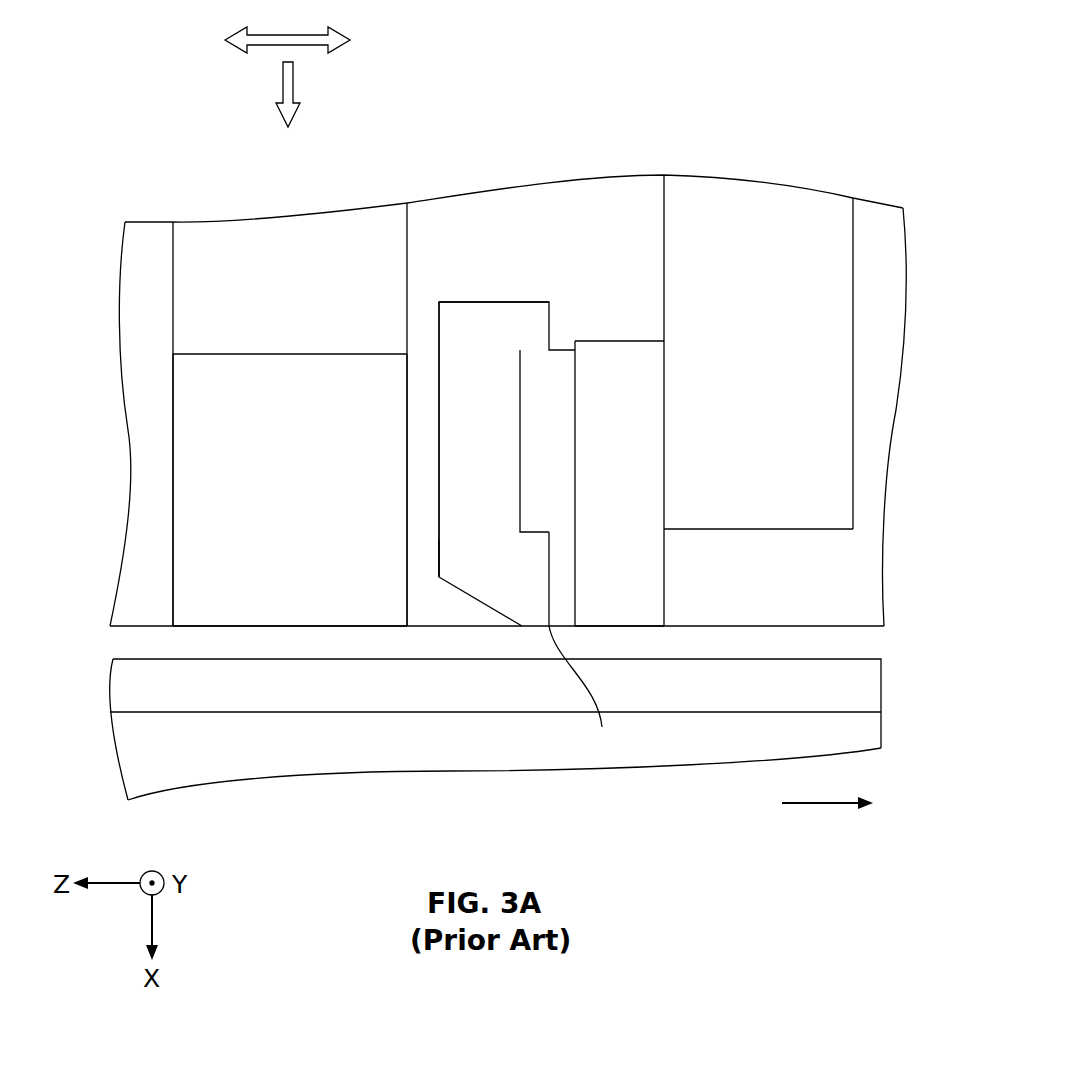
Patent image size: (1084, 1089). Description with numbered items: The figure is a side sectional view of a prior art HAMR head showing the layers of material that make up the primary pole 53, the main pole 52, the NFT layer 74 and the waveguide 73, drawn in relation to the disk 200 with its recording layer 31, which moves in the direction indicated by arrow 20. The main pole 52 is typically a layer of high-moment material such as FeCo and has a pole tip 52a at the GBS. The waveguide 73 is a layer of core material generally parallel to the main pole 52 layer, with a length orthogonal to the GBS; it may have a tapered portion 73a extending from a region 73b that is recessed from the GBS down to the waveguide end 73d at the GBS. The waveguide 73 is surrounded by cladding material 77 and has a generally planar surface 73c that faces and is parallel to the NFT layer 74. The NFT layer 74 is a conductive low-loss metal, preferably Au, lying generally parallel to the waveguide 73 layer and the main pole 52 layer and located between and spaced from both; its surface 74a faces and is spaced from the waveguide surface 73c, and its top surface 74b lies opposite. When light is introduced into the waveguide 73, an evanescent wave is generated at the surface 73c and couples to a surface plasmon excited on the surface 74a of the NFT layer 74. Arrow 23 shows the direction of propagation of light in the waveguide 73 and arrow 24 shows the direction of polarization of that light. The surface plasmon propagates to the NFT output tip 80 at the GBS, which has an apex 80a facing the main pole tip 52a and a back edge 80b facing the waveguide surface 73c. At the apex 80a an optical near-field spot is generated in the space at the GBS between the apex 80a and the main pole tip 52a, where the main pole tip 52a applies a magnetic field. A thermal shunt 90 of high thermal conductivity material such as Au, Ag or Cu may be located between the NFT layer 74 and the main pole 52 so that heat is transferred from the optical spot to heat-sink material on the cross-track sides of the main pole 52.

The disk moving direction 20 is at (812, 804).
The arrow 23 is at (278, 100).
The arrow 24 is at (321, 33).
The recording layer 31 is at (868, 693).
The main pole 52 is at (650, 588).
The pole tip 52a is at (648, 628).
The primary pole 53 is at (835, 260).
The waveguide 73 is at (212, 232).
The tapered portion 73a is at (173, 565).
The region 73b is at (258, 354).
The planar surface 73c is at (407, 477).
The waveguide end 73d is at (208, 628).
The NFT layer 74 is at (527, 335).
The surface 74a is at (439, 355).
The top surface of layer 74 74b is at (447, 302).
The cladding material 77 is at (143, 325).
The output tip 80 is at (465, 597).
The apex 80a is at (589, 695).
The back edge 80b is at (439, 567).
The thermal shunt 90 is at (558, 437).
The magnetic recording disk 200 is at (870, 732).
The gas bearing surface GBS is at (873, 628).